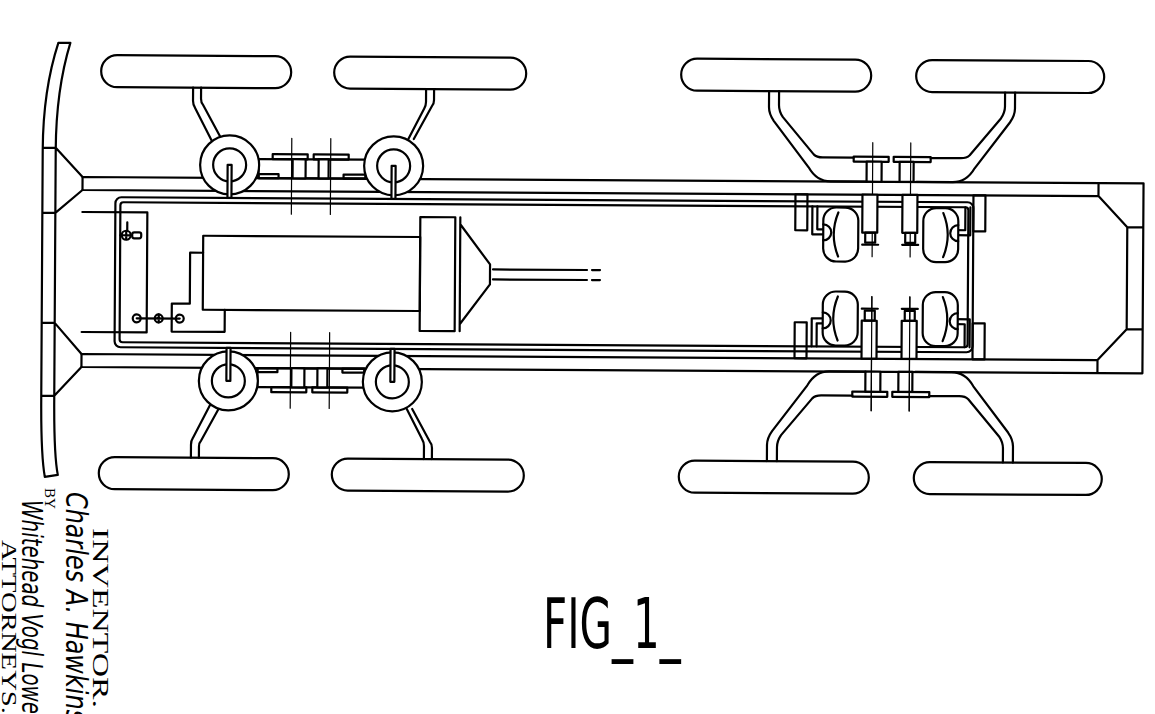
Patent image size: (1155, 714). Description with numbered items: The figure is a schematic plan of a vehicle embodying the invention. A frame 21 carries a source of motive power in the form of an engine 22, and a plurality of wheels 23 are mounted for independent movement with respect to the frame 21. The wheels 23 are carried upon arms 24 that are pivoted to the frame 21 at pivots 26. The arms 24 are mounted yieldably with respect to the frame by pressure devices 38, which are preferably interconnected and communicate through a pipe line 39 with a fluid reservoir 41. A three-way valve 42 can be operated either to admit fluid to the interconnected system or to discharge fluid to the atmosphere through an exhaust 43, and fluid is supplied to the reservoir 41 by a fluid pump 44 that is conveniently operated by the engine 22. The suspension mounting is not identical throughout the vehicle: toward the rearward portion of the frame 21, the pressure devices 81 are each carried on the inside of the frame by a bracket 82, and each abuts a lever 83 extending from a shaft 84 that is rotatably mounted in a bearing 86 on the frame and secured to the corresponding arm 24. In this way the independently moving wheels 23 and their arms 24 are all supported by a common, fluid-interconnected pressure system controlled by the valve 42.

The frame 21 is at (622, 180).
The engine 22 is at (328, 281).
The wheels 23 is at (267, 63).
The arms 24 is at (427, 112).
The pivot 26 is at (332, 152).
The pressure devices 38 is at (420, 155).
The pipe line 39 is at (625, 202).
The fluid reservoir 41 is at (140, 245).
The three-way valve 42 is at (141, 232).
The exhaust 43 is at (128, 224).
The fluid pump 44 is at (192, 303).
The pressure devices 81 is at (843, 257).
The bracket 82 is at (980, 213).
The lever 83 is at (918, 242).
The shaft 84 is at (908, 240).
The bearing 86 is at (903, 215).